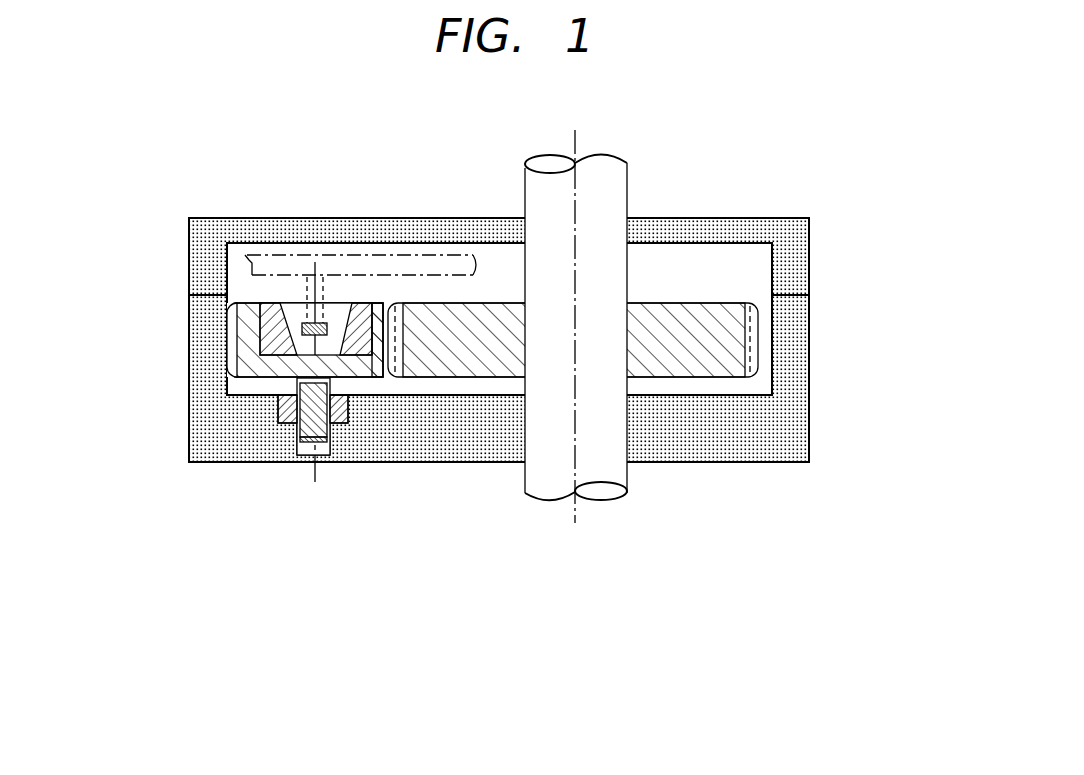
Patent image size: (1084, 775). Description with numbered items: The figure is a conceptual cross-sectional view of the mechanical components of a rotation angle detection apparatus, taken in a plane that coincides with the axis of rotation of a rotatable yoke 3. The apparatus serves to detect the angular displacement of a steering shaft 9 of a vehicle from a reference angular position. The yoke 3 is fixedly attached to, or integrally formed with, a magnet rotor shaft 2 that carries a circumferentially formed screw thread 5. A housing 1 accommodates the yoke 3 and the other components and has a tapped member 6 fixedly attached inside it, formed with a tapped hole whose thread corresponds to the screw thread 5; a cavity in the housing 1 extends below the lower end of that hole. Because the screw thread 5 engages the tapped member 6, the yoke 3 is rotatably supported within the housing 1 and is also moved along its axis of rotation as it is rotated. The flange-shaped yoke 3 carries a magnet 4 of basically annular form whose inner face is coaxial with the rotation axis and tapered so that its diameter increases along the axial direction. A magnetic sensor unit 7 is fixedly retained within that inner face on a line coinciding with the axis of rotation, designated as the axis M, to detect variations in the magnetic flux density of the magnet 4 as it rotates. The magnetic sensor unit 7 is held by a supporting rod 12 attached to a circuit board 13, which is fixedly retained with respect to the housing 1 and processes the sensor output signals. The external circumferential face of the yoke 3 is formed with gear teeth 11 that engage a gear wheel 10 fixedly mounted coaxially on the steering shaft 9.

The housing 1 is at (212, 453).
The magnet rotor shaft 2 is at (290, 424).
The yoke 3 is at (376, 362).
The magnet 4 is at (375, 335).
The screw thread 5 is at (342, 432).
The tapped member 6 is at (353, 420).
The magnetic sensor unit 7 is at (302, 325).
The steering shaft 9 is at (615, 192).
The gear wheel 10 is at (708, 360).
The gear teeth 11 is at (230, 352).
The supporting rod 12 is at (327, 305).
The circuit board 13 is at (232, 260).
The axis M is at (313, 487).